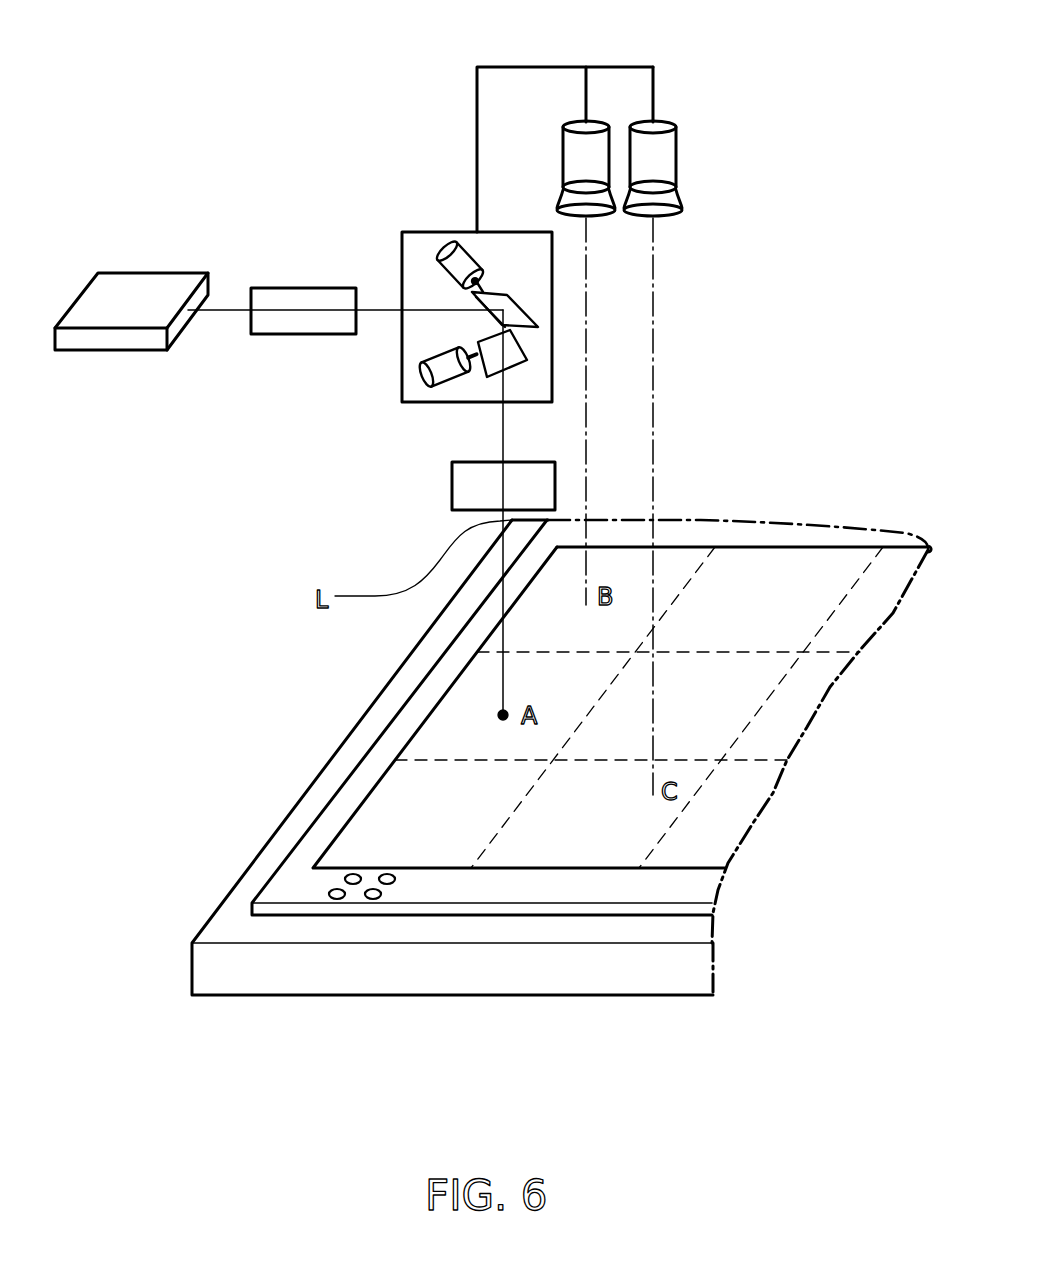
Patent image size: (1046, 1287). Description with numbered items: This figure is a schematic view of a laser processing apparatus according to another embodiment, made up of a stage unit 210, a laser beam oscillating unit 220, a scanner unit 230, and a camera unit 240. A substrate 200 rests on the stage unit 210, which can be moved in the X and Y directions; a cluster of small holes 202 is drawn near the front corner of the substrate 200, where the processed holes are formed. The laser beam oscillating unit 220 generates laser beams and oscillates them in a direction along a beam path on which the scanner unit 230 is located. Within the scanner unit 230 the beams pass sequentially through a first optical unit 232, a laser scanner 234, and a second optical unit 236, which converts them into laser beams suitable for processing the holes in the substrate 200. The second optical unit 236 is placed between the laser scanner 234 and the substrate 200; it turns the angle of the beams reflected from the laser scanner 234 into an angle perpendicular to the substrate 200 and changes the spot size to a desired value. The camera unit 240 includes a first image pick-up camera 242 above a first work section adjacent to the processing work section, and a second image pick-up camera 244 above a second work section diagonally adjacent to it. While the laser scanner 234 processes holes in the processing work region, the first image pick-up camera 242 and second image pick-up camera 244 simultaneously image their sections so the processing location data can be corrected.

The substrate 200 is at (627, 893).
The alignment holes 202 is at (392, 881).
The stage unit 210 is at (268, 968).
The laser beam oscillating unit 220 is at (139, 339).
The scanner unit 230 is at (395, 371).
The first optical unit 232 is at (301, 333).
The laser scanner 234 is at (398, 378).
The second optical unit 236 is at (445, 486).
The camera unit 240 is at (669, 122).
The first image pick-up camera 242 is at (592, 128).
The second image pick-up camera 244 is at (663, 153).